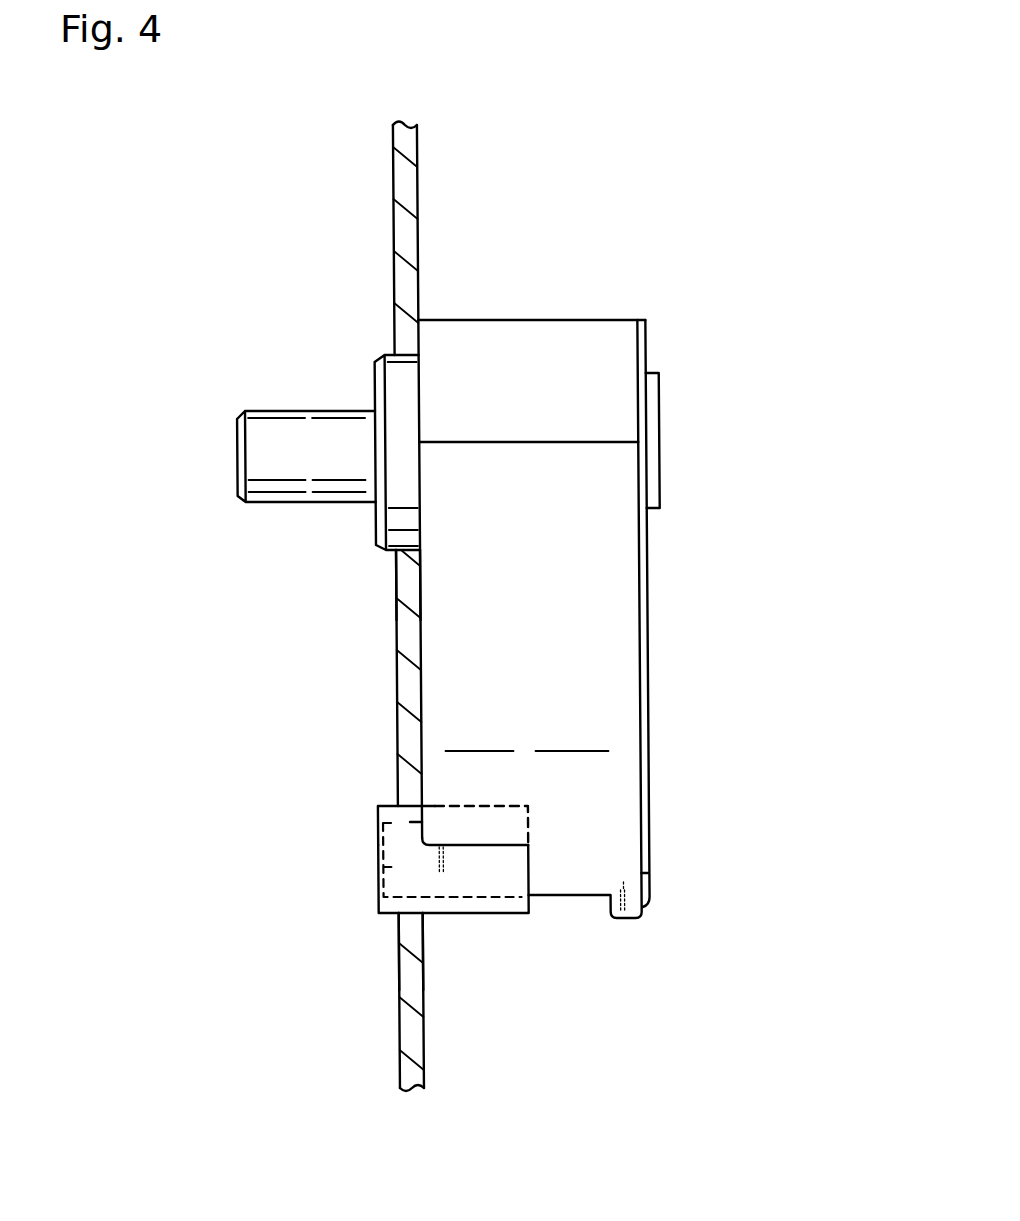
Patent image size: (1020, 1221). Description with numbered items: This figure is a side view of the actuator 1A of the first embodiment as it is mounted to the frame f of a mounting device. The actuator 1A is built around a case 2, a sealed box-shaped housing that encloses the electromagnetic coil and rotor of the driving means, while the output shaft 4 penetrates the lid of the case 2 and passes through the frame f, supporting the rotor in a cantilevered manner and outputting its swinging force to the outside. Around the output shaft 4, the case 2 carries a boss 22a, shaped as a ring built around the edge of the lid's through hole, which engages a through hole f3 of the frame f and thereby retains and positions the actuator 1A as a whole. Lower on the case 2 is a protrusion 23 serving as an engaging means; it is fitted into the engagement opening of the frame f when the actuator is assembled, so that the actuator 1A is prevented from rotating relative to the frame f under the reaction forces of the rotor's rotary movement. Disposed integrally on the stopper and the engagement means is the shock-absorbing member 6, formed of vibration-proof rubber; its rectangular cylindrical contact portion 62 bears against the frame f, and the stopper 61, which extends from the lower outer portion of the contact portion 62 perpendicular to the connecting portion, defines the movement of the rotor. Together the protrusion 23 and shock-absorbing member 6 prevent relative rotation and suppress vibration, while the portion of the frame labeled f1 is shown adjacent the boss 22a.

The actuator 1A is at (650, 139).
The frame f is at (405, 182).
The panel hole f1 is at (394, 557).
The through hole f3 is at (400, 913).
The boss 22a is at (390, 390).
The output shaft 4 is at (267, 457).
The case 2 is at (602, 669).
The shock-absorbing member 6 is at (480, 907).
The contact portion 62 is at (383, 816).
The stopper 61 is at (507, 820).
The protrusion 23 is at (400, 867).